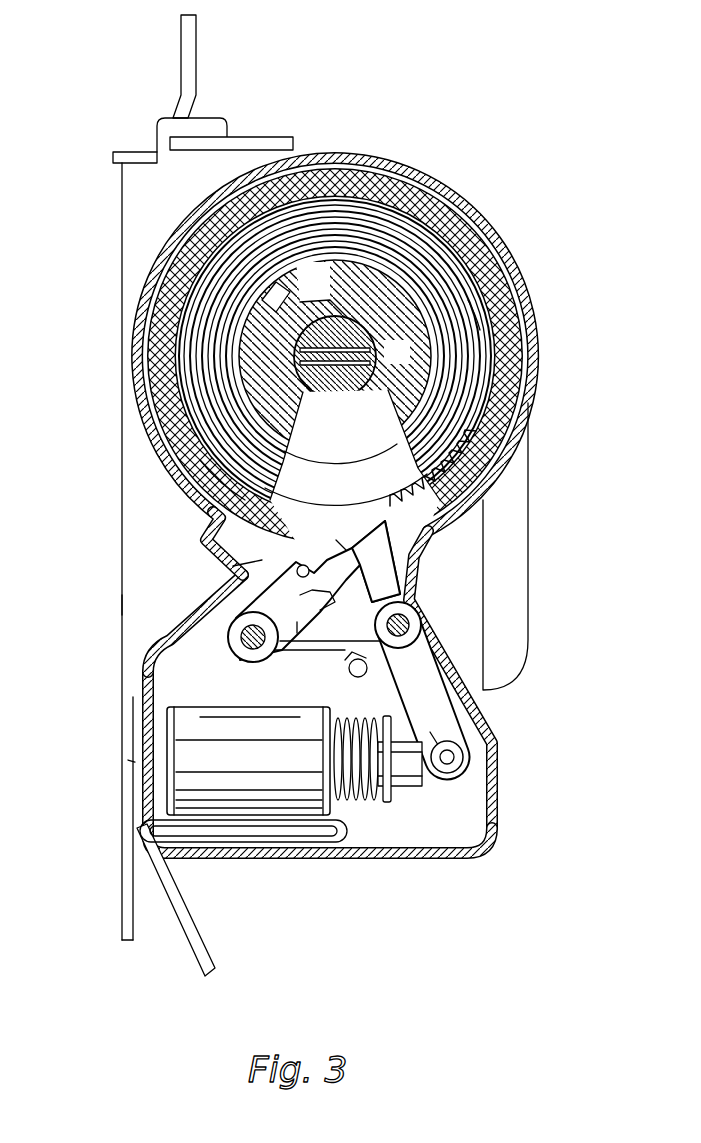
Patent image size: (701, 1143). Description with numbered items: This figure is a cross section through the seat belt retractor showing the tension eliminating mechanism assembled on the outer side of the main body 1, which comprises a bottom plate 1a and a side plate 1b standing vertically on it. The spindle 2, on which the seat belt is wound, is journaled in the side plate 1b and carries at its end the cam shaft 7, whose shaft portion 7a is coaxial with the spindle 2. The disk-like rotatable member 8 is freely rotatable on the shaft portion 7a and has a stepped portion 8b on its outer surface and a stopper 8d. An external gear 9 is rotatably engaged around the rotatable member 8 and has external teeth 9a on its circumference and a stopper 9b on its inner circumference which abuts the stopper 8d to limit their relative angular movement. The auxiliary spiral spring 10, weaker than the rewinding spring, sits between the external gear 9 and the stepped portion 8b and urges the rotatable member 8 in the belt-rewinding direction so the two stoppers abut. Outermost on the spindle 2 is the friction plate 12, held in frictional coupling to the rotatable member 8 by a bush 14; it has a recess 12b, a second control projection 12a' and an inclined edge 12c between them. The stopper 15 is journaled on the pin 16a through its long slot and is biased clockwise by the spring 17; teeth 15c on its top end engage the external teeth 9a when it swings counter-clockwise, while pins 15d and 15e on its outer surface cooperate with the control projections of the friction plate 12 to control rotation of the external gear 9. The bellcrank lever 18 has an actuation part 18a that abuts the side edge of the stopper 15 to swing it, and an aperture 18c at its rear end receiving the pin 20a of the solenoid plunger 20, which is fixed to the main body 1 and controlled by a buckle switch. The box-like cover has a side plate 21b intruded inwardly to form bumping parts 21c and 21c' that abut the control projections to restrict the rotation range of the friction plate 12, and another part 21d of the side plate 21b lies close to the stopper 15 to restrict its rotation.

The main body 1 is at (121, 218).
The bottom plate 1a is at (128, 762).
The side plate 1b is at (120, 606).
The spindle 2 is at (372, 364).
The cam shaft 7 is at (373, 320).
The shaft portion 7a is at (335, 322).
The rotatable member 8 is at (490, 356).
The stepped portion 8b is at (470, 304).
The stopper 8d is at (205, 430).
The external gear 9 is at (478, 252).
The external teeth 9a is at (415, 490).
The stopper 9b is at (298, 474).
The auxiliary spiral spring 10 is at (452, 206).
The friction plate 12 is at (506, 414).
The second control projection 12a' is at (252, 551).
The recess 12b is at (339, 528).
The inclined edge 12c is at (300, 592).
The bush 14 is at (357, 423).
The stopper 15 is at (230, 656).
The teeth 15c is at (380, 528).
The pin 15d is at (384, 625).
The pin 15e is at (298, 565).
The pin 16a is at (252, 636).
The spring 17 is at (342, 672).
The bellcrank lever 18 is at (465, 722).
The actuation part 18a is at (308, 644).
The aperture 18c is at (440, 742).
The solenoid plunger 20 is at (244, 800).
The pin 20a is at (436, 772).
The side plate 21b is at (372, 862).
The bumping part 21c is at (450, 679).
The bumping part 21c' is at (158, 543).
The part of side plate 21d is at (240, 586).